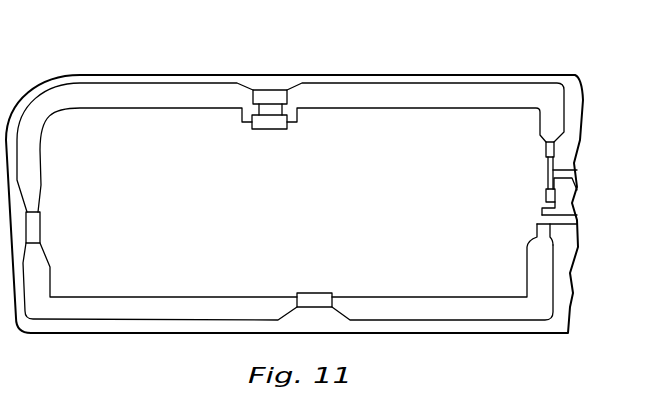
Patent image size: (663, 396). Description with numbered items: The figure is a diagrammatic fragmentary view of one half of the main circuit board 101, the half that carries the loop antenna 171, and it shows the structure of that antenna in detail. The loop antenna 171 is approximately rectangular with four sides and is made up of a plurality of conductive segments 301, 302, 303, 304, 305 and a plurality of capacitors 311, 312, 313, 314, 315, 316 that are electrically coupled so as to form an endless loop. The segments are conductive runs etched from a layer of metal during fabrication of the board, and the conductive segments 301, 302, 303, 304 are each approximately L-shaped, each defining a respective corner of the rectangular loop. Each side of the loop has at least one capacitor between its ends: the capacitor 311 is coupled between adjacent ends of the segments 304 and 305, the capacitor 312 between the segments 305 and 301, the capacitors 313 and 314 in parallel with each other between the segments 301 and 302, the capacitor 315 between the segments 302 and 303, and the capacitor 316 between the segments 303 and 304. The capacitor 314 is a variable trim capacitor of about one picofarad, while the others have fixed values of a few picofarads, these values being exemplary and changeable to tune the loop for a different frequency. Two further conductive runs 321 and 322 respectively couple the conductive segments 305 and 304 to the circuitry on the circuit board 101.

The main circuit board 101 is at (85, 75).
The loop antenna 171 is at (200, 84).
The conductive segment 301 is at (408, 103).
The conductive segment 302 is at (150, 103).
The conductive segment 303 is at (160, 305).
The conductive segment 304 is at (440, 305).
The conductive segment 305 is at (548, 163).
The capacitor 311 is at (546, 192).
The capacitor 312 is at (555, 150).
The capacitor 313 is at (268, 90).
The variable trim capacitor 314 is at (270, 130).
The capacitor 315 is at (42, 226).
The capacitor 316 is at (313, 292).
The conductive run 321 is at (571, 187).
The conductive run 322 is at (565, 228).